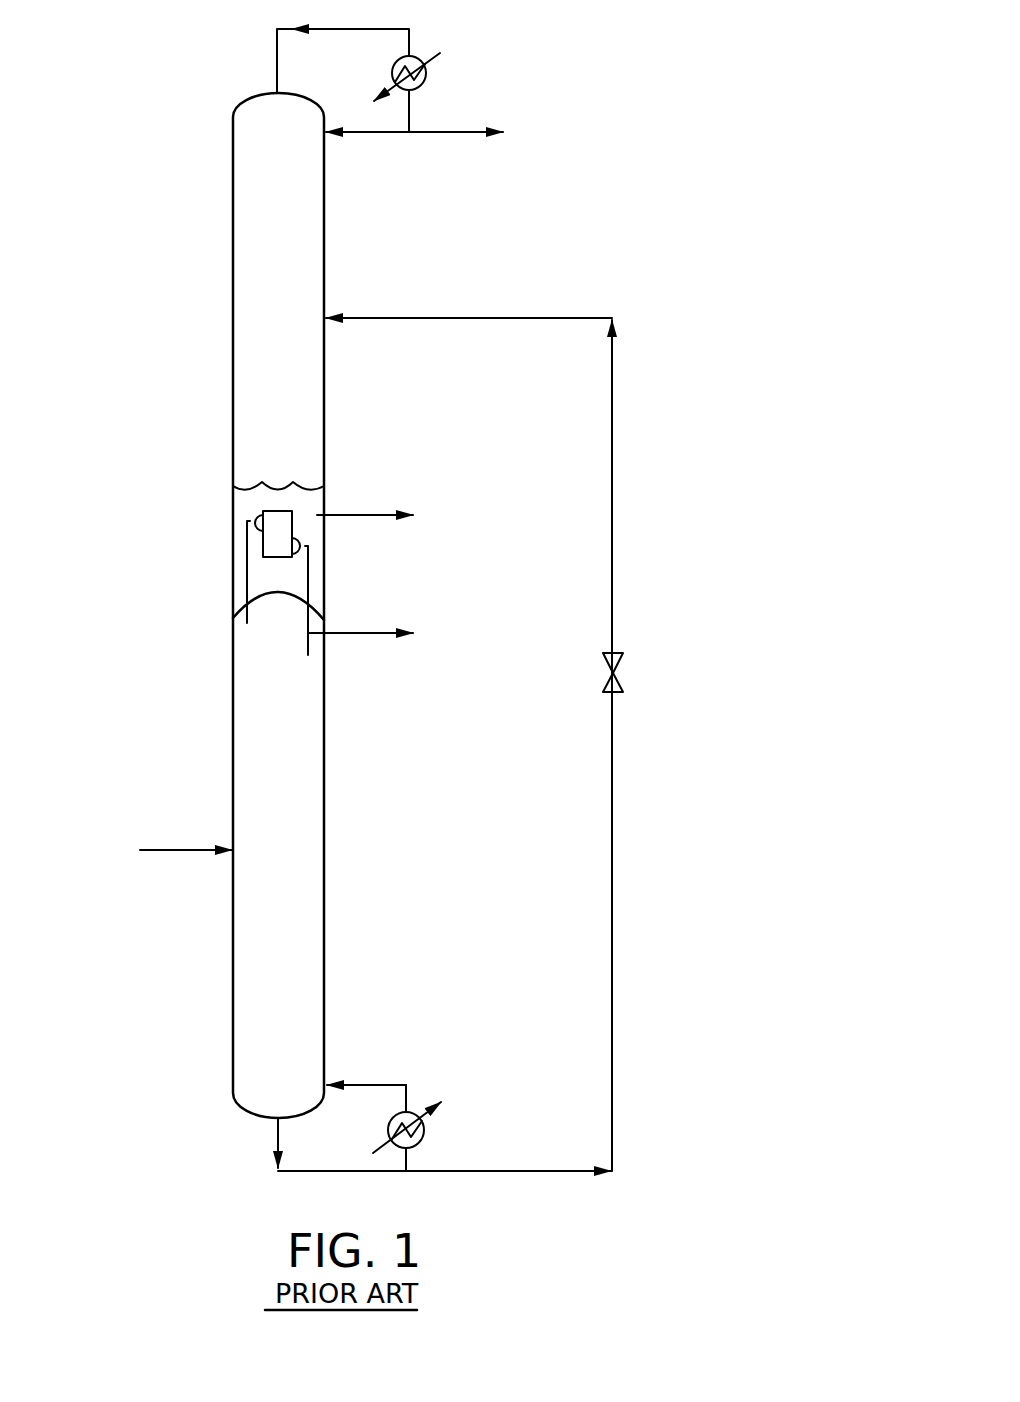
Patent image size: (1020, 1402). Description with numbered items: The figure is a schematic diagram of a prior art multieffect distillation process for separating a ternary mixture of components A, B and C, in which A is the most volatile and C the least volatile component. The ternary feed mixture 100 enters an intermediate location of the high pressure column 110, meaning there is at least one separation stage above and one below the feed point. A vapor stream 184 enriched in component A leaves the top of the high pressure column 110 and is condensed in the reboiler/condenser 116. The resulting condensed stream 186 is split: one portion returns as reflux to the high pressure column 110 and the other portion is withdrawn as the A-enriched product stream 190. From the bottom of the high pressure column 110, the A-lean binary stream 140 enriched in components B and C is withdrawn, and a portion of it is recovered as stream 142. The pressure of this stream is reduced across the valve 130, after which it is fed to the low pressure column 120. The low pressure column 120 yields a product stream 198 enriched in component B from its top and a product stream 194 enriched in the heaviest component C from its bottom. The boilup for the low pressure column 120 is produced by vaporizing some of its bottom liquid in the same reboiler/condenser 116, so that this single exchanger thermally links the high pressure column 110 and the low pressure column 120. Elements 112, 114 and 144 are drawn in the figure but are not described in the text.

The ternary feed mixture 100 is at (178, 851).
The high pressure column 110 is at (327, 920).
The reboiler 112 is at (410, 1114).
The condenser 114 is at (417, 60).
The reboiler/condenser 116 is at (275, 518).
The low pressure column 120 is at (233, 222).
The valve 130 is at (622, 680).
The A-lean binary stream 140 is at (278, 1130).
The recovered stream 142 is at (500, 1172).
The recycle BC stream line 144 is at (543, 318).
The vapor stream 184 is at (235, 617).
The condensed stream 186 is at (317, 587).
The A-enriched product stream 190 is at (352, 637).
The C-enriched product stream 194 is at (357, 513).
The B-enriched product stream 198 is at (450, 132).